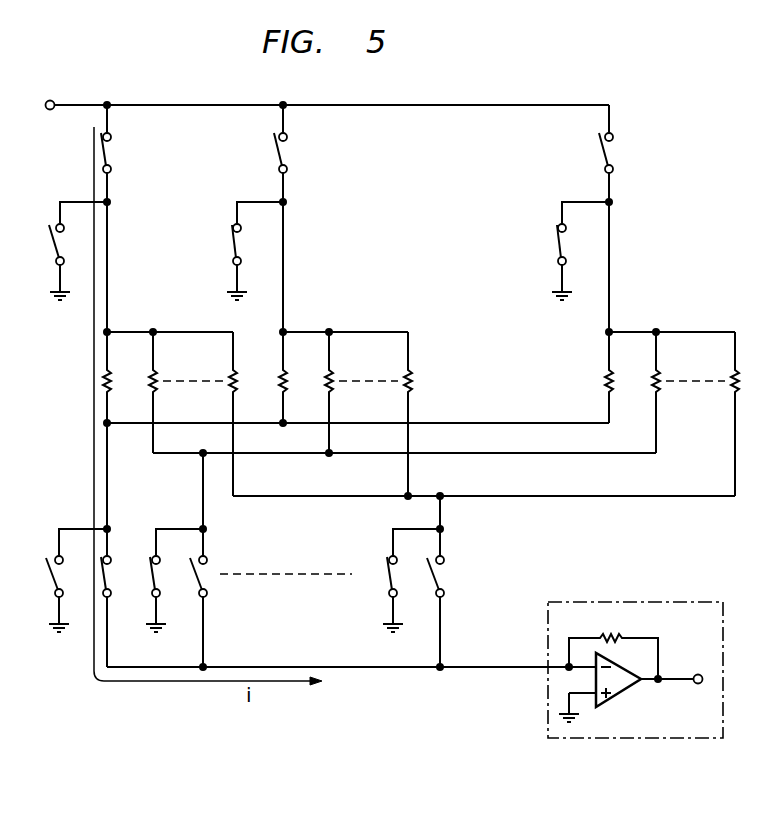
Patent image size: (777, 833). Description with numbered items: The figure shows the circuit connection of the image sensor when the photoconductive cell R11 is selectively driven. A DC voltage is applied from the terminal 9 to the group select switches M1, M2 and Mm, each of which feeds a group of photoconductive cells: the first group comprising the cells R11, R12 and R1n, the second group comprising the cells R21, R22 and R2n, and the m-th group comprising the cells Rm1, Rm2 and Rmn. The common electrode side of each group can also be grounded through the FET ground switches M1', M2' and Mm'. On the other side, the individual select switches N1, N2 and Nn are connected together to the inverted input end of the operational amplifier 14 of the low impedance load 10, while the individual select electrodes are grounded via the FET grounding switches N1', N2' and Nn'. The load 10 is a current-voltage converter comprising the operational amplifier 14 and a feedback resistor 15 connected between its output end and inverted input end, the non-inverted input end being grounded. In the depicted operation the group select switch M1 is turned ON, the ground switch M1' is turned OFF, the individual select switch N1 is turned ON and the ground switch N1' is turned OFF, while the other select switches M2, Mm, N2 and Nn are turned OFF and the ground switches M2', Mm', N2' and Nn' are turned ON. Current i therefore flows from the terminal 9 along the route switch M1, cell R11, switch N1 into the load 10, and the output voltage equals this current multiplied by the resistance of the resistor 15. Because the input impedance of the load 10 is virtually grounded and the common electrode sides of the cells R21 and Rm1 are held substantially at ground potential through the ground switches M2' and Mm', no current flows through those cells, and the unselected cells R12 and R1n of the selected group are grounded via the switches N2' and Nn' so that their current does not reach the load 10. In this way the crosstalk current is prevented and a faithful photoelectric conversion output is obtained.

The terminal 9 is at (50, 100).
The low impedance load 10 is at (660, 602).
The operational amplifier 14 is at (626, 692).
The feedback resistor 15 is at (608, 636).
The group select switch M1 is at (84, 153).
The ground switch M1' is at (64, 251).
The group select switch M2 is at (258, 153).
The ground switch M2' is at (237, 251).
The group select switch Mm is at (582, 153).
The ground switch Mm' is at (558, 251).
The photoconductive cell R11 is at (101, 381).
The photoconductive cell R12 is at (148, 381).
The photoconductive cell R1n is at (228, 381).
The photoconductive cell R21 is at (278, 381).
The photoconductive cell R22 is at (324, 381).
The photoconductive cell R2n is at (403, 381).
The photoconductive cell Rm1 is at (604, 381).
The photoconductive cell Rm2 is at (651, 381).
The photoconductive cell Rmn is at (730, 381).
The individual select switch N1 is at (91, 598).
The grounding switch N1' is at (65, 580).
The individual select switch N2 is at (188, 598).
The grounding switch N2' is at (163, 580).
The individual select switch Nn is at (425, 598).
The grounding switch Nn' is at (400, 580).